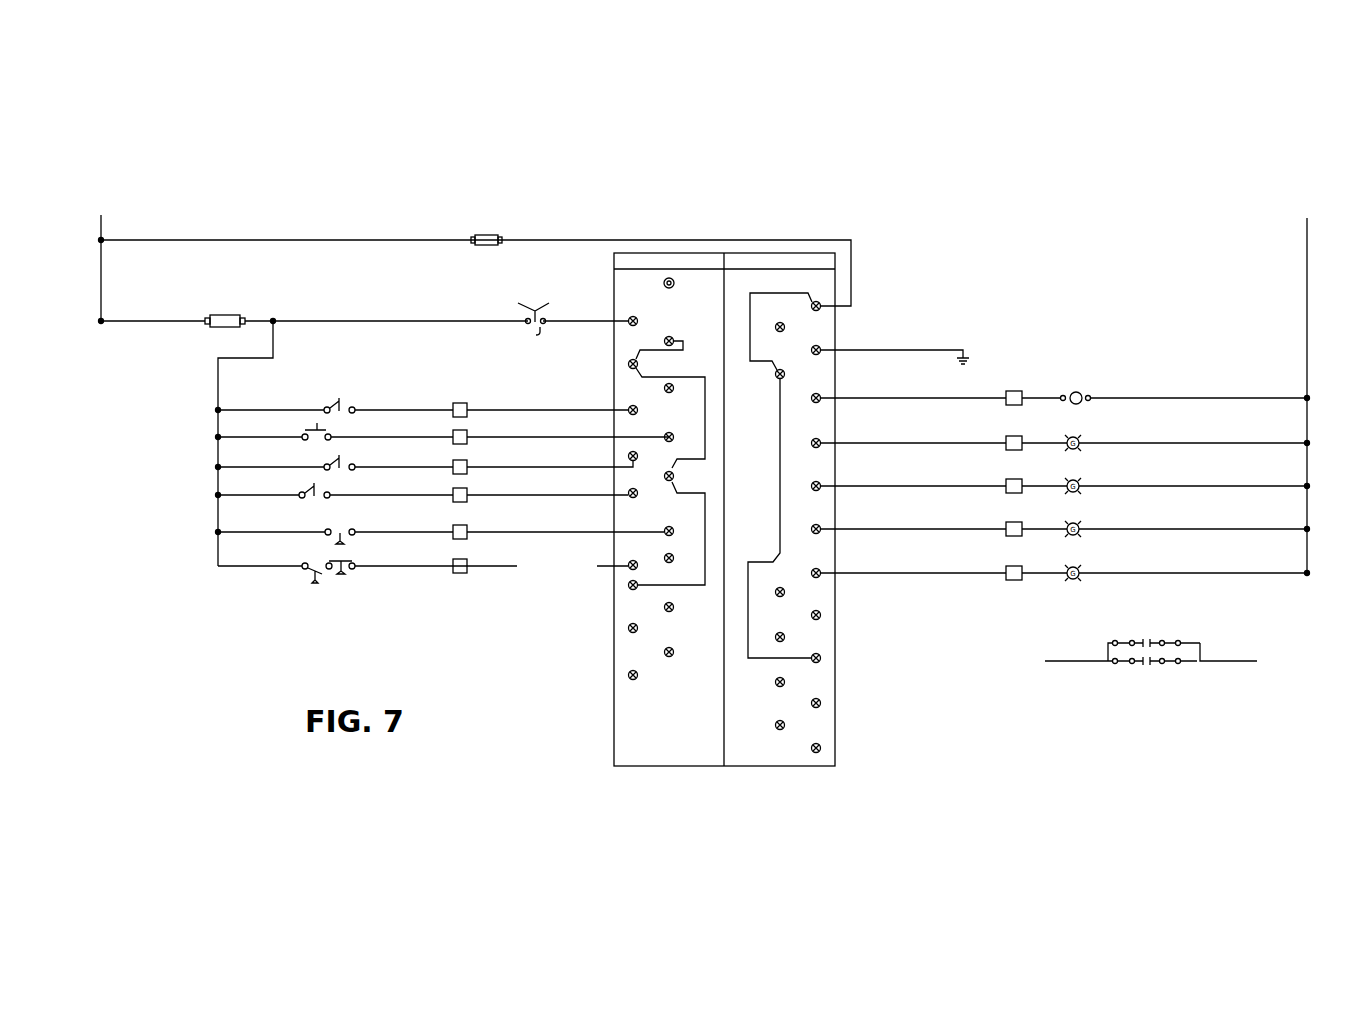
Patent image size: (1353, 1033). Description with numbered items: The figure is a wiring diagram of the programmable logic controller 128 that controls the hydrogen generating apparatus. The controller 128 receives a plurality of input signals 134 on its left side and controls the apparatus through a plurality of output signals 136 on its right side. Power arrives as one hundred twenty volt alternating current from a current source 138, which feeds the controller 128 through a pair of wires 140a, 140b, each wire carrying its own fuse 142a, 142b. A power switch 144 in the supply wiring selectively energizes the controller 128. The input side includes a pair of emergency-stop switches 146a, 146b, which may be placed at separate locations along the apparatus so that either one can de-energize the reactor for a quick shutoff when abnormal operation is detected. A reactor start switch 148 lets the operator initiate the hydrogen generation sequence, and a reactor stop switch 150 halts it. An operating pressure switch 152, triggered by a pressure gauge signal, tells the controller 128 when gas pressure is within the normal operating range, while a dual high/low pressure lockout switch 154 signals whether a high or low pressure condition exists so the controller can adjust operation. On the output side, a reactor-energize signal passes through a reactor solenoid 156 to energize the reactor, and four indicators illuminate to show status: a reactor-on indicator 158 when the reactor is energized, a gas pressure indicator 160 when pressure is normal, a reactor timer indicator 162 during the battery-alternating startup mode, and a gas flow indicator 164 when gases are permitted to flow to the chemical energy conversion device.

The programmable logic controller 128 is at (725, 218).
The input signals 134 is at (410, 588).
The output signals 136 is at (891, 602).
The current source 138 is at (148, 180).
The wire 140a is at (266, 240).
The wire 140b is at (165, 322).
The fuse 142a is at (500, 232).
The fuse 142b is at (240, 315).
The power switch 144 is at (540, 327).
The emergency-stop switch 146a is at (330, 405).
The emergency-stop switch 146b is at (304, 498).
The reactor start switch 148 is at (305, 426).
The reactor stop switch 150 is at (330, 465).
The operating pressure switch 152 is at (352, 527).
The dual high/low pressure lockout switch 154 is at (332, 582).
The reactor solenoid 156 is at (1078, 391).
The reactor-on indicator 158 is at (1082, 440).
The gas pressure indicator 160 is at (1085, 484).
The reactor timer indicator 162 is at (1085, 527).
The gas flow indicator 164 is at (1085, 571).